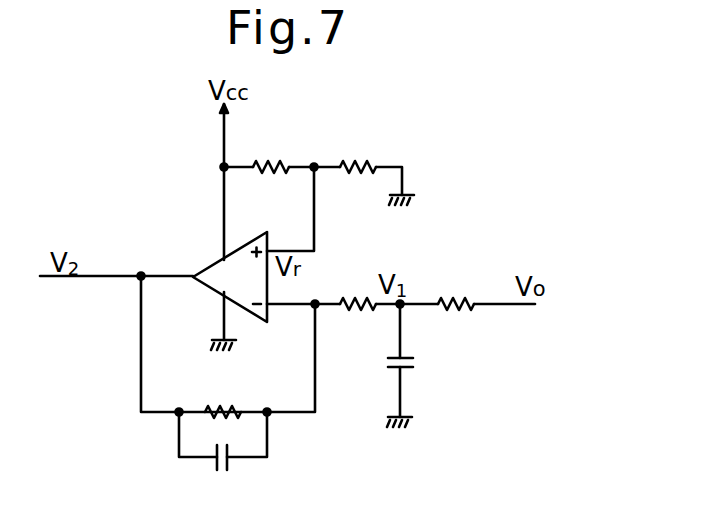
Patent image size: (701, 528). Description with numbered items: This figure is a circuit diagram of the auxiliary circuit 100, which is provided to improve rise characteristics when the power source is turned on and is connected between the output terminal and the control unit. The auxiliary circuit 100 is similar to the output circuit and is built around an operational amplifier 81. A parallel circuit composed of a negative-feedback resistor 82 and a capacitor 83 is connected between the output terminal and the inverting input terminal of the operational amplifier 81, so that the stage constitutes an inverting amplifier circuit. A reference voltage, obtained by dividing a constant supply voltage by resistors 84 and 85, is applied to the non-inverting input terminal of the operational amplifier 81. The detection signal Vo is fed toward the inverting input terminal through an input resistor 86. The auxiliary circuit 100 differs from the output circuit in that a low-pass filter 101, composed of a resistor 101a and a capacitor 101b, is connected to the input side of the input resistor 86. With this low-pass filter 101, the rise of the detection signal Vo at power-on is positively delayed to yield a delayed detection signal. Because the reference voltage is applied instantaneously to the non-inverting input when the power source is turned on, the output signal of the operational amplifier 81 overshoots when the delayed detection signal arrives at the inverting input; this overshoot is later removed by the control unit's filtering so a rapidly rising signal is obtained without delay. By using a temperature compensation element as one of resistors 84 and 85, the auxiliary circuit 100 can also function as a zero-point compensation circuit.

The operational amplifier 81 is at (212, 263).
The negative-feedback resistor 82 is at (228, 405).
The capacitor 83 is at (233, 463).
The resistor 84 is at (266, 160).
The resistor 85 is at (353, 160).
The input resistor 86 is at (347, 310).
The auxiliary circuit 100 is at (418, 129).
The low-pass filter 101 is at (423, 338).
The resistor 101a is at (452, 312).
The capacitor 101b is at (415, 365).